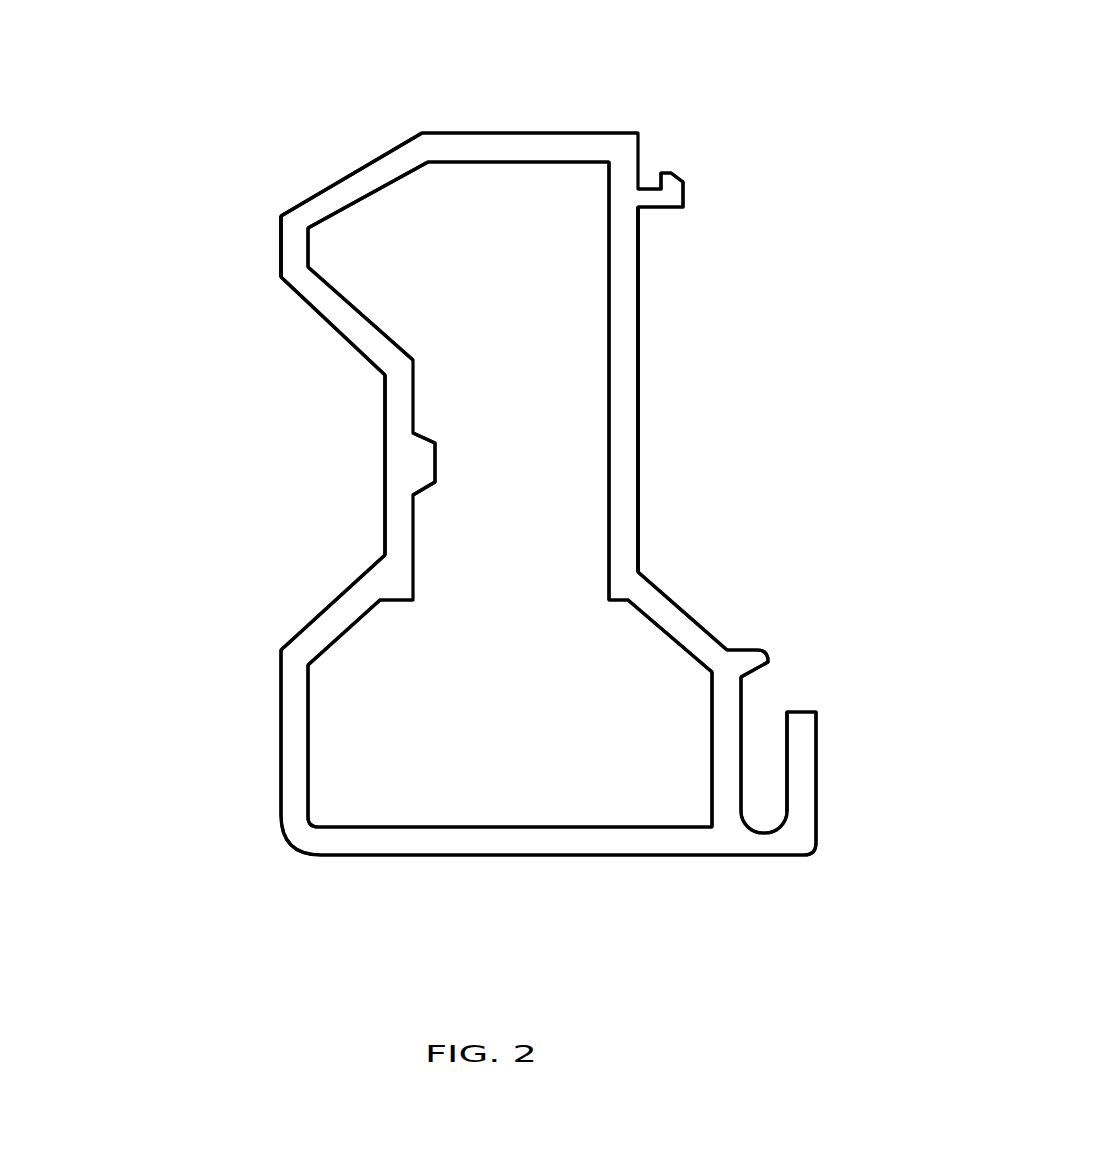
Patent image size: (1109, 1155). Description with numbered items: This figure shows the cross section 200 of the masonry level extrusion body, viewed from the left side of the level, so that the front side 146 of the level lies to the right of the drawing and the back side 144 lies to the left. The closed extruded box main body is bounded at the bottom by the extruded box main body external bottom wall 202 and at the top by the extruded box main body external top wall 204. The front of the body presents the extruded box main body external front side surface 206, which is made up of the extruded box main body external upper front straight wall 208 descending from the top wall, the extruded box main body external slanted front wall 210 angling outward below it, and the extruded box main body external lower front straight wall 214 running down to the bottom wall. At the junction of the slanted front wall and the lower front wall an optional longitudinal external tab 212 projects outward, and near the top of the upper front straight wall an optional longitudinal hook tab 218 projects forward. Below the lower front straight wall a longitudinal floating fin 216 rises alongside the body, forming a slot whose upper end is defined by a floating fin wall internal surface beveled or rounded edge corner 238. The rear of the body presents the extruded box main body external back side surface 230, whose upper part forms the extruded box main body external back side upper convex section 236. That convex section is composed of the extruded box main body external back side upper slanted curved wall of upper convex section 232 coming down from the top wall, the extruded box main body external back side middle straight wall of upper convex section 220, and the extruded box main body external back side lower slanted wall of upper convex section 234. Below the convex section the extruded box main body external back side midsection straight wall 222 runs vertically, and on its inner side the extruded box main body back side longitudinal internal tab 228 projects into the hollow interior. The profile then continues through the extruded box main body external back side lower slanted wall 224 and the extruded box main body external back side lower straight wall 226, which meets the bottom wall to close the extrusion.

The cross section 200 is at (775, 55).
The extruded box main body external bottom wall 202 is at (588, 855).
The extruded box main body external top wall 204 is at (541, 119).
The extruded box main body external front side surface 206 is at (781, 461).
The extruded box main body external upper front straight wall 208 is at (638, 383).
The extruded box main body external slanted front wall 210 is at (697, 618).
The longitudinal external tab 212 is at (762, 648).
The extruded box main body external lower front straight wall 214 is at (742, 708).
The longitudinal floating fin 216 is at (816, 770).
The longitudinal hook tab 218 is at (687, 183).
The extruded box main body external back side middle straight wall of upper convex s 220 is at (275, 238).
The extruded box main body external back side midsection straight wall 222 is at (373, 470).
The extruded box main body external back side lower slanted wall 224 is at (328, 602).
The extruded box main body external back side lower straight wall 226 is at (281, 745).
The extruded box main body back side longitudinal internal tab 228 is at (437, 462).
The extruded box main body external back side surface 230 is at (191, 500).
The extruded box main body external back side upper slanted curved wall of upper con 232 is at (332, 177).
The extruded box main body external back side lower slanted wall of upper convex sec 234 is at (325, 328).
The extruded box main body external back side upper convex section 236 is at (174, 286).
The floating fin wall internal surface beveled or rounded edge corner 238 is at (797, 722).
The back side 144 is at (161, 432).
The front side 146 is at (841, 354).